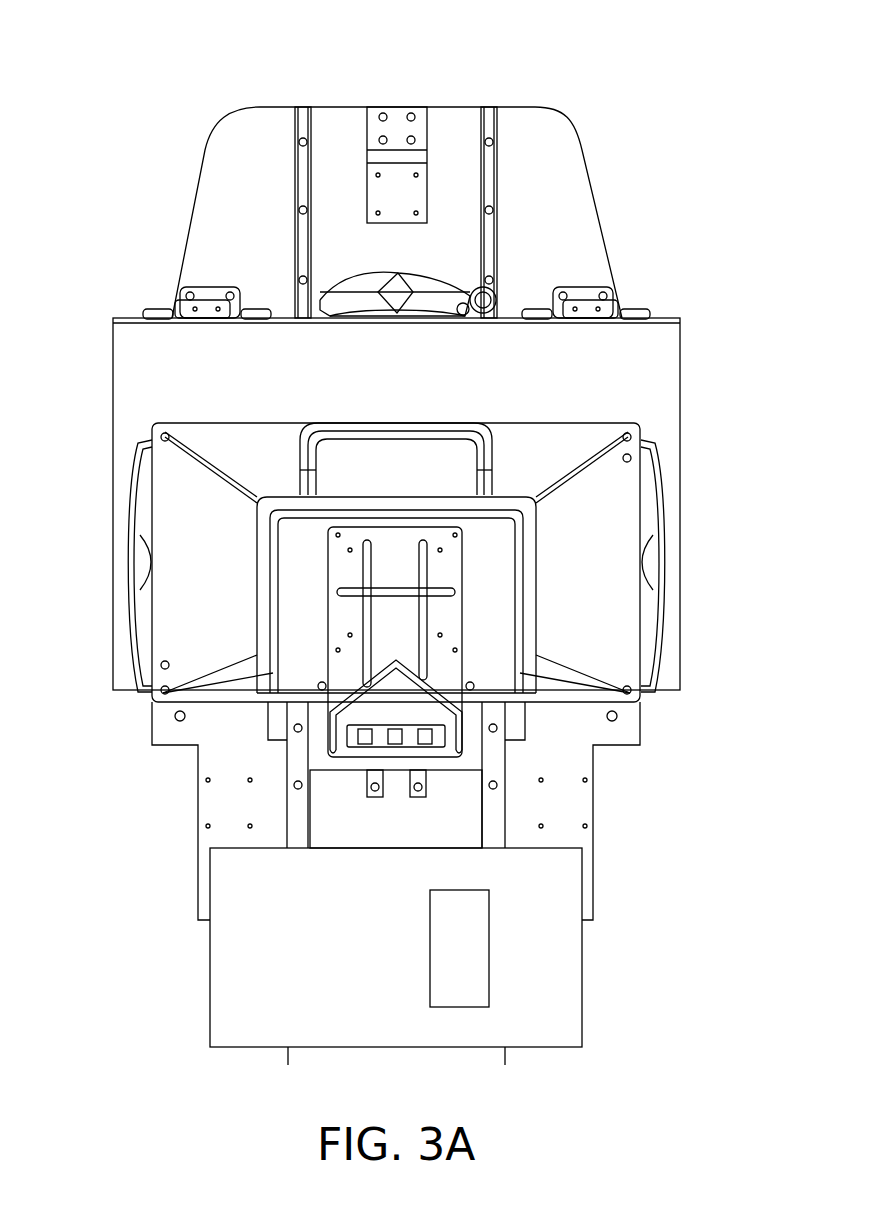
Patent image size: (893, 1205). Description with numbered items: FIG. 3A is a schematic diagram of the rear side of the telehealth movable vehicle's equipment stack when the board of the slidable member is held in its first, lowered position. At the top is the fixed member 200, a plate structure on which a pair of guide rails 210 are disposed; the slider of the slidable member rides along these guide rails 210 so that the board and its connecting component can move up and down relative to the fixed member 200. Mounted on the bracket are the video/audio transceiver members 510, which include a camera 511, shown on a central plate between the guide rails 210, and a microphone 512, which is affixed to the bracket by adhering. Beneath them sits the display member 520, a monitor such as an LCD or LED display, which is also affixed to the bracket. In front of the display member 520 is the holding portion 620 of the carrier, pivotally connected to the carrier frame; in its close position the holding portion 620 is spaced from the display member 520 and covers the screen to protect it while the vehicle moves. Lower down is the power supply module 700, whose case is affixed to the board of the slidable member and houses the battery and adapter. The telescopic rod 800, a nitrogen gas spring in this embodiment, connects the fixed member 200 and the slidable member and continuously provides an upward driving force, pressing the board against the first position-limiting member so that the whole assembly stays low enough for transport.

The fixed member 200 is at (210, 212).
The guide rail 210 is at (303, 118).
The video/audio transceiver member 510 is at (538, 163).
The camera 511 is at (395, 290).
The microphone 512 is at (497, 296).
The display member 520 is at (653, 378).
The holding portion 620 is at (175, 565).
The power supply module 700 is at (232, 985).
The telescopic rod 800 is at (397, 826).